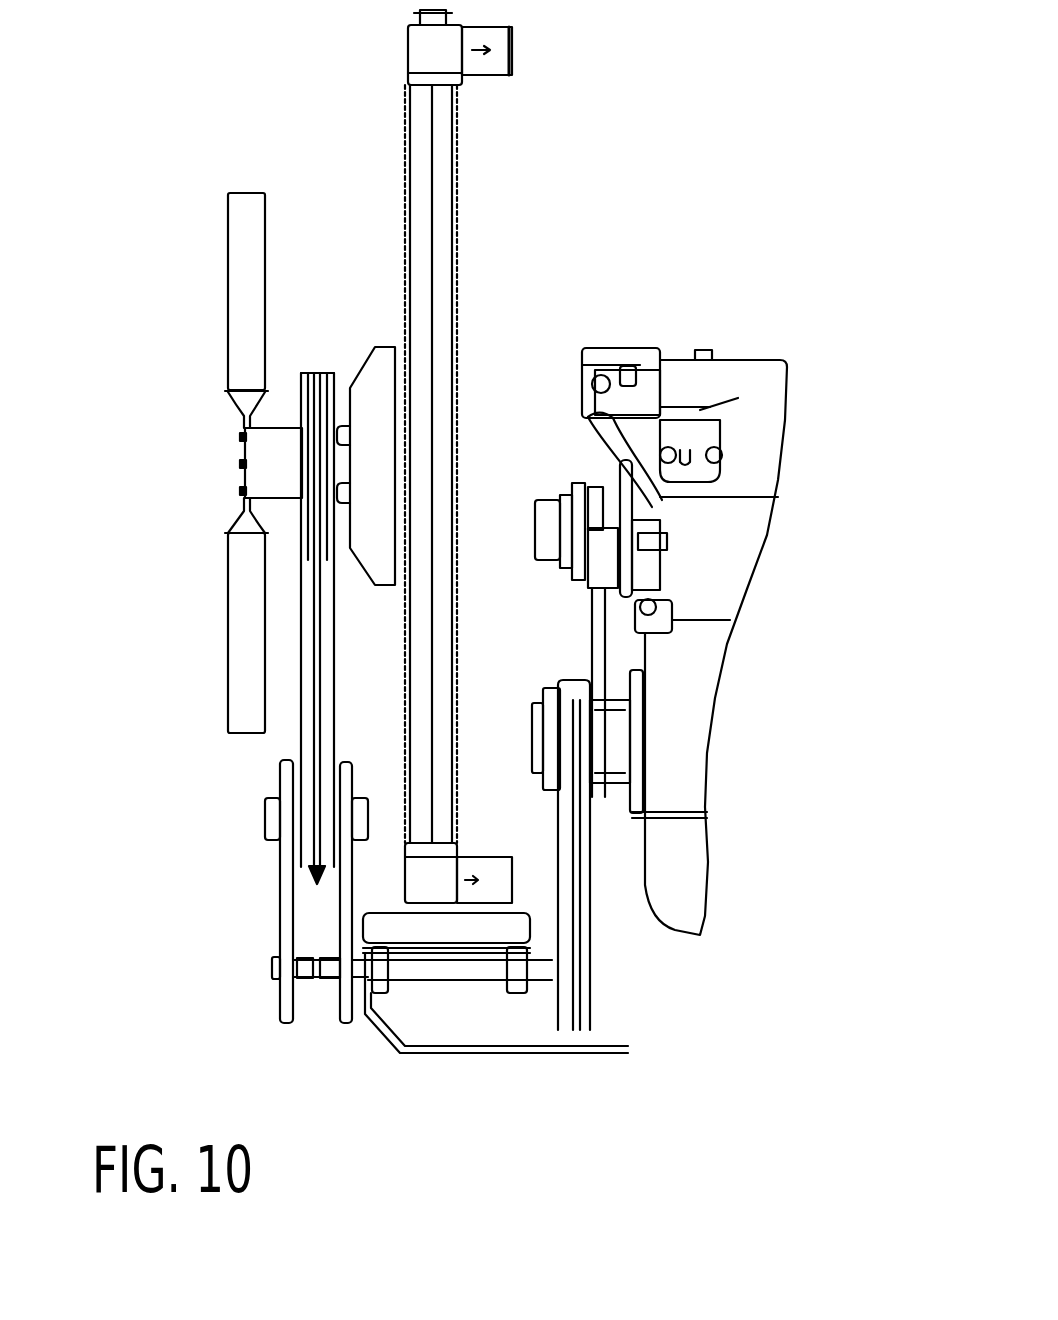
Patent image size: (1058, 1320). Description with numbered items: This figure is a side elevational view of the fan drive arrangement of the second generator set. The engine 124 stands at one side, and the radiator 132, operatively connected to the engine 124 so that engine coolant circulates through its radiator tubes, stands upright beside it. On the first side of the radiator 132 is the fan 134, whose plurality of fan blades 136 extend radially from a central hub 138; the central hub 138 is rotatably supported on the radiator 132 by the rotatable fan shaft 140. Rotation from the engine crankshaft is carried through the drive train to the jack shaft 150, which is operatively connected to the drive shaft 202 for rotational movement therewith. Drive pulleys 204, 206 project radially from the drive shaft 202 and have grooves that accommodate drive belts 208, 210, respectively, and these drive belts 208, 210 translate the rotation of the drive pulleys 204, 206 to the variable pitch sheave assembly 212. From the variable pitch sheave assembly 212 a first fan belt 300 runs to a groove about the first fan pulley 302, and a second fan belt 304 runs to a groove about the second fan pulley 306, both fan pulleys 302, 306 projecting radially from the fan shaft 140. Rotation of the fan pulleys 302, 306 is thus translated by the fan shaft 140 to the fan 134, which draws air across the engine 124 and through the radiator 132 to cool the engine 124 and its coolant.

The engine 124 is at (737, 538).
The radiator 132 is at (417, 152).
The fan 134 is at (245, 186).
The fan blades 136 is at (237, 272).
The central hub 138 is at (243, 450).
The fan shaft 140 is at (337, 453).
The jack shaft 150 is at (450, 977).
The drive shaft 202 is at (300, 947).
The drive pulley 204 is at (280, 1005).
The drive pulley 206 is at (342, 1023).
The drive belt 208 is at (308, 950).
The drive belt 210 is at (340, 905).
The variable pitch sheave assembly 212 is at (272, 786).
The first fan belt 300 is at (300, 653).
The first fan pulley 302 is at (303, 375).
The second fan belt 304 is at (333, 652).
The second fan pulley 306 is at (340, 388).